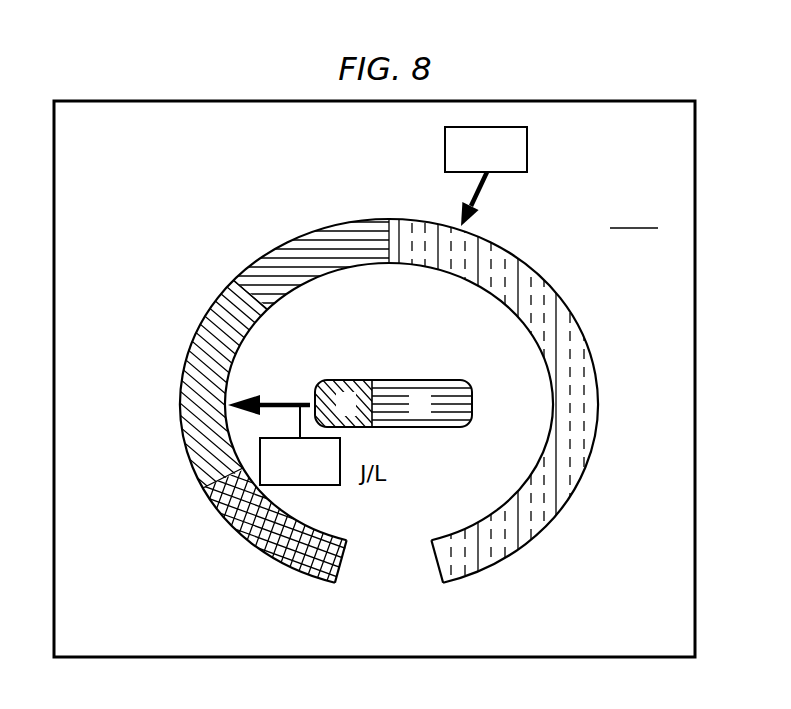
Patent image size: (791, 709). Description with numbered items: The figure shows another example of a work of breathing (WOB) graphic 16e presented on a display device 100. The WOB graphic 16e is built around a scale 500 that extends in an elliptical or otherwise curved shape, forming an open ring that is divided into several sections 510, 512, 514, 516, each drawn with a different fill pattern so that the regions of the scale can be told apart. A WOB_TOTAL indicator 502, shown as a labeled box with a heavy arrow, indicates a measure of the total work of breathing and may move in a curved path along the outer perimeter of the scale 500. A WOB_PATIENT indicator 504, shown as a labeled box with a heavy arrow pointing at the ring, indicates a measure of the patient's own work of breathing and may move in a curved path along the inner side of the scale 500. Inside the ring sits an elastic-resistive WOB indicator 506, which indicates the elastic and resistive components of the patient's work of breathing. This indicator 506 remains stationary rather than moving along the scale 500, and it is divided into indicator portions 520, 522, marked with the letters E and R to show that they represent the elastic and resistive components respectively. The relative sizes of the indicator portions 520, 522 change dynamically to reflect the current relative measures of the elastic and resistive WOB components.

The display device 100 is at (551, 95).
The WOB graphic 16e is at (634, 215).
The scale 500 is at (368, 405).
The WOB_TOTAL indicator 502 is at (528, 146).
The WOB_PATIENT indicator 504 is at (275, 402).
The elastic-resistive WOB indicator 506 is at (389, 410).
The section of scale 510 is at (281, 556).
The section of scale 512 is at (184, 431).
The section of scale 514 is at (303, 238).
The section of scale 516 is at (566, 313).
The indicator portion 520 is at (357, 380).
The indicator portion 522 is at (444, 429).